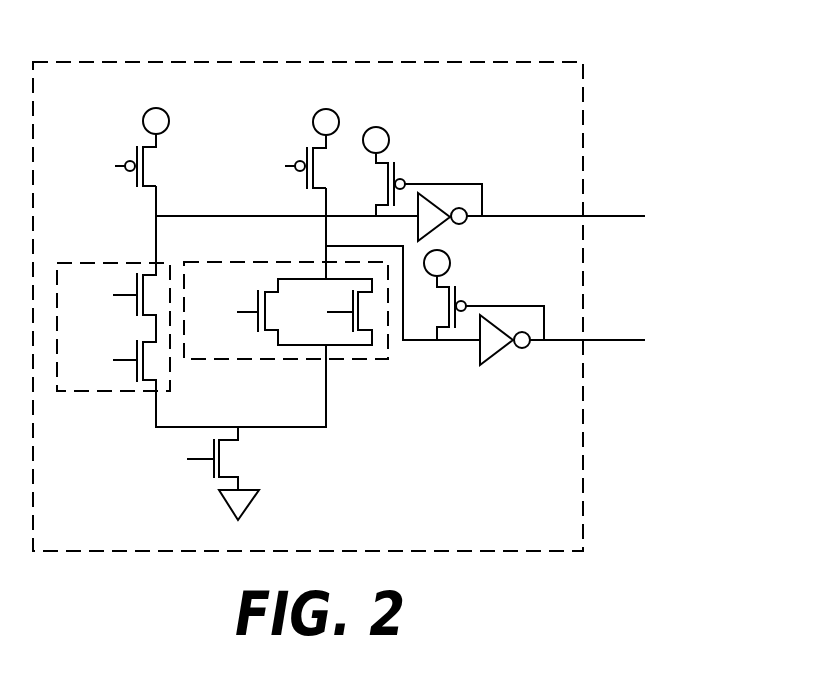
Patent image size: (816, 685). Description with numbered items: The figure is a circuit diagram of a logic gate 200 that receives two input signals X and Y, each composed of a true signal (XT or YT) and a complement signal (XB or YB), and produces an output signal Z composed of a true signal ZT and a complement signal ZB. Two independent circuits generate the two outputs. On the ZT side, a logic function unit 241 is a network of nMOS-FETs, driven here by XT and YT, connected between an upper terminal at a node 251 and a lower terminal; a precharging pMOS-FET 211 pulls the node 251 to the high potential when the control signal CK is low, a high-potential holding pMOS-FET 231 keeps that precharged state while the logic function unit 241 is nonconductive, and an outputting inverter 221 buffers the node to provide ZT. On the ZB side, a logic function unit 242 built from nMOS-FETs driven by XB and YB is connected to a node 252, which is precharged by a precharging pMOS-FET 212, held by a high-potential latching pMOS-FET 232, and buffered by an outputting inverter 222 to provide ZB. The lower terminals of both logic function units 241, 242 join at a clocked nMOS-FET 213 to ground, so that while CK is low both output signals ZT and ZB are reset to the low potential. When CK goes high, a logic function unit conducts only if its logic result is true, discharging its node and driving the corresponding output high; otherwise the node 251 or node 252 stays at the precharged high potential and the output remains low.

The logic gate 200 is at (460, 62).
The precharging pMOS-FET 211 is at (136, 145).
The precharging pMOS-FET 212 is at (305, 148).
The nMOS-FET 213 is at (213, 484).
The outputting inverter 221 is at (430, 188).
The outputting inverter 222 is at (497, 355).
The high-potential holding pMOS-FET 231 is at (402, 166).
The high-potential latching pMOS-FET 232 is at (458, 292).
The logic function unit 241 is at (98, 393).
The logic function unit 242 is at (345, 362).
The node 251 is at (169, 216).
The node 252 is at (410, 333).